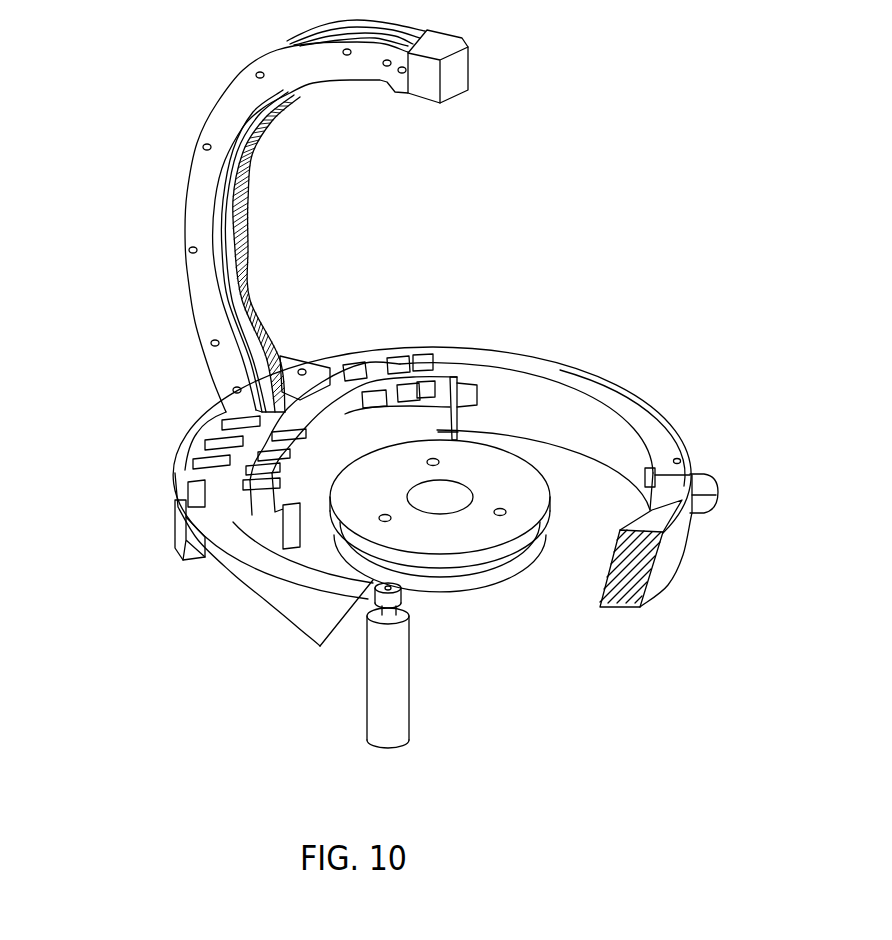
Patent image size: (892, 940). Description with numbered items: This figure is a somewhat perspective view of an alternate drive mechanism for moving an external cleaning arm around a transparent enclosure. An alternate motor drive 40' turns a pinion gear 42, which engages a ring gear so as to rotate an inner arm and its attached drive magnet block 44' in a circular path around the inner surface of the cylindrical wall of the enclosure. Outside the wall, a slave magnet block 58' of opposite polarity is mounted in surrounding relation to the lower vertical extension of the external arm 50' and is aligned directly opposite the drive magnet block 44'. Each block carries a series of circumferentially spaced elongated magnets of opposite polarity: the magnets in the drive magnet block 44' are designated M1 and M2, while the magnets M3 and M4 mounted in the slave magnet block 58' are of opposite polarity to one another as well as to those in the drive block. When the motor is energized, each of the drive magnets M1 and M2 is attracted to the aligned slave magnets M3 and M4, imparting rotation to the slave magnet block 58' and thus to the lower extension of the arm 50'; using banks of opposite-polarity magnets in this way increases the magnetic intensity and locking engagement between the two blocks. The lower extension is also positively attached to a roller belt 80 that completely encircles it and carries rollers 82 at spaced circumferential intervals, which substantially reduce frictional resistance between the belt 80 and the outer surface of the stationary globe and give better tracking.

The arm 50' is at (302, 216).
The slave magnet block 58' is at (210, 413).
The elongated magnet M4 is at (192, 463).
The elongated magnet M3 is at (227, 480).
The elongated magnet M2 is at (378, 390).
The elongated magnet M1 is at (435, 390).
The drive magnet block 44' is at (525, 365).
The rollers 82 is at (180, 542).
The roller belt 80 is at (215, 567).
The pinion gear 42 is at (400, 593).
The motor drive 40' is at (440, 678).